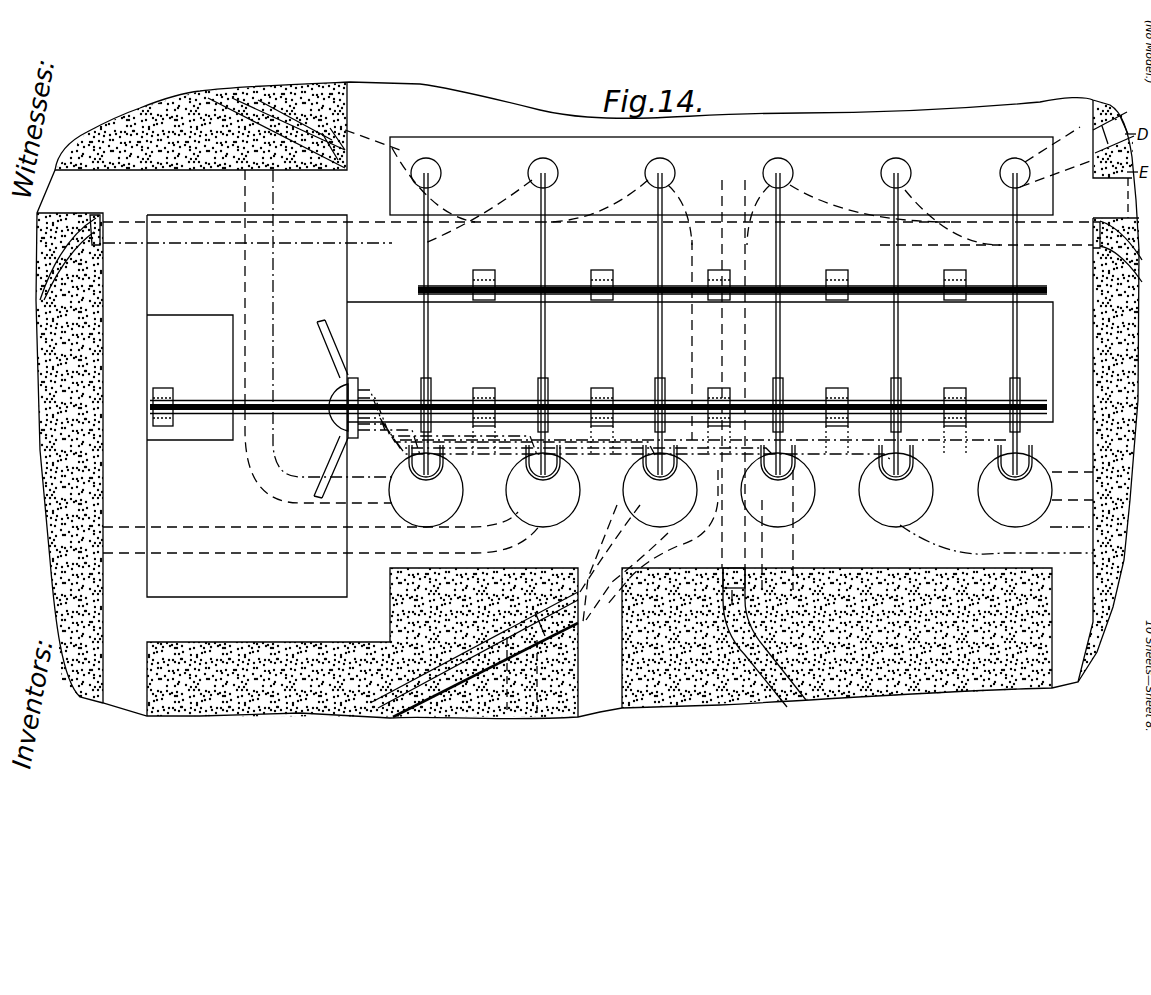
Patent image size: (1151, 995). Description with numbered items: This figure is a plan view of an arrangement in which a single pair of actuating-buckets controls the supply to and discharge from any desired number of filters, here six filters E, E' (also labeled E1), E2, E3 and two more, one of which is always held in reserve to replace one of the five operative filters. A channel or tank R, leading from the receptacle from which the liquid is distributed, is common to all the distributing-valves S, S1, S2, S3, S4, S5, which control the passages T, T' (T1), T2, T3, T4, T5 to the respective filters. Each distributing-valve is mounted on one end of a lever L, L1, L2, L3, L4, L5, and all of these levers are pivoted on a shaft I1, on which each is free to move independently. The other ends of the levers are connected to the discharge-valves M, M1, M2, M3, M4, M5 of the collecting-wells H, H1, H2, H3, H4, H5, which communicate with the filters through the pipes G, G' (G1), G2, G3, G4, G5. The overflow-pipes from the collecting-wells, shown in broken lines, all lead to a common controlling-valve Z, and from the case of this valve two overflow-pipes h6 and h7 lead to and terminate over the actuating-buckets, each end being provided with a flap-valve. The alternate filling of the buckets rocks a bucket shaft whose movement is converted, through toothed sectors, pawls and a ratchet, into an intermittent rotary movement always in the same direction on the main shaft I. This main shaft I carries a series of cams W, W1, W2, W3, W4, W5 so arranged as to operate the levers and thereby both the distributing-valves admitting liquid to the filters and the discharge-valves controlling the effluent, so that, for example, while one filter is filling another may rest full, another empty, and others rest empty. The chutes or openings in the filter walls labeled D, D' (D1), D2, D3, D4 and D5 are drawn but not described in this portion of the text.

The filter E is at (201, 123).
The filter E' is at (62, 458).
The filter E1 is at (60, 477).
The filter E2 is at (262, 712).
The filter E3 is at (896, 692).
The chute in top wall D is at (276, 133).
The chute in left wall D' is at (70, 257).
The chute in left wall D1 is at (62, 244).
The chute in bottom left wall D2 is at (475, 654).
The chute in bottom right wall D3 is at (764, 637).
The chute in right wall D4 is at (1117, 251).
The chute in upper right wall D5 is at (1113, 132).
The passage T is at (372, 126).
The passage T' is at (596, 252).
The passage T1 is at (177, 250).
The passage T2 is at (600, 608).
The passage T3 is at (734, 578).
The passage T4 is at (1071, 252).
The passage T5 is at (1056, 151).
The pipe G is at (320, 336).
The pipe G' is at (321, 522).
The pipe G1 is at (190, 525).
The pipe G2 is at (600, 526).
The pipe G3 is at (795, 548).
The pipe G4 is at (952, 526).
The pipe G5 is at (1070, 474).
The channel or tank R is at (721, 176).
The distributing-valve S is at (438, 169).
The distributing-valve S1 is at (555, 169).
The distributing-valve S2 is at (672, 169).
The distributing-valve S3 is at (790, 169).
The distributing-valve S4 is at (908, 169).
The distributing-valve S5 is at (1027, 169).
The lever L is at (429, 246).
The lever L1 is at (546, 246).
The lever L2 is at (663, 246).
The lever L3 is at (781, 246).
The lever L4 is at (899, 246).
The lever L5 is at (1018, 246).
The cam W is at (431, 380).
The cam W1 is at (548, 380).
The cam W2 is at (665, 380).
The cam W3 is at (783, 380).
The cam W4 is at (901, 380).
The cam W5 is at (1020, 380).
The discharge-valve M is at (418, 473).
The discharge-valve M1 is at (534, 473).
The discharge-valve M2 is at (651, 473).
The discharge-valve M3 is at (769, 473).
The discharge-valve M4 is at (887, 473).
The discharge-valve M5 is at (1006, 473).
The collecting-well H is at (426, 490).
The collecting-well H1 is at (543, 490).
The collecting-well H2 is at (660, 490).
The collecting-well H3 is at (778, 490).
The collecting-well H4 is at (896, 490).
The collecting-well H5 is at (1015, 490).
The main shaft I is at (277, 401).
The shaft I1 is at (627, 298).
The controlling-valve Z is at (335, 412).
The overflow-pipe h6 is at (330, 342).
The overflow-pipe h7 is at (322, 470).